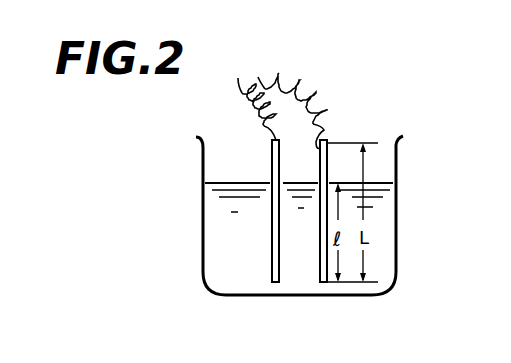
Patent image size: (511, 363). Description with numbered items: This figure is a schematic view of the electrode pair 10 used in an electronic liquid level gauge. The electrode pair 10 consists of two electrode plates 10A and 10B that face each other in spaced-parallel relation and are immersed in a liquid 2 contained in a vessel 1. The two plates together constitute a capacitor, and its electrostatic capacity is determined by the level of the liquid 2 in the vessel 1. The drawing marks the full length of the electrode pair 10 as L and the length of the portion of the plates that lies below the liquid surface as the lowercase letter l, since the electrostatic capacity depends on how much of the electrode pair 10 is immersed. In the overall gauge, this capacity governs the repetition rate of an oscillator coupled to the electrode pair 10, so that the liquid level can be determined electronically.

The vessel 1 is at (397, 161).
The liquid 2 is at (243, 258).
The electrode pair 10 is at (322, 92).
The electrode plate 10A is at (324, 140).
The electrode plate 10B is at (272, 164).